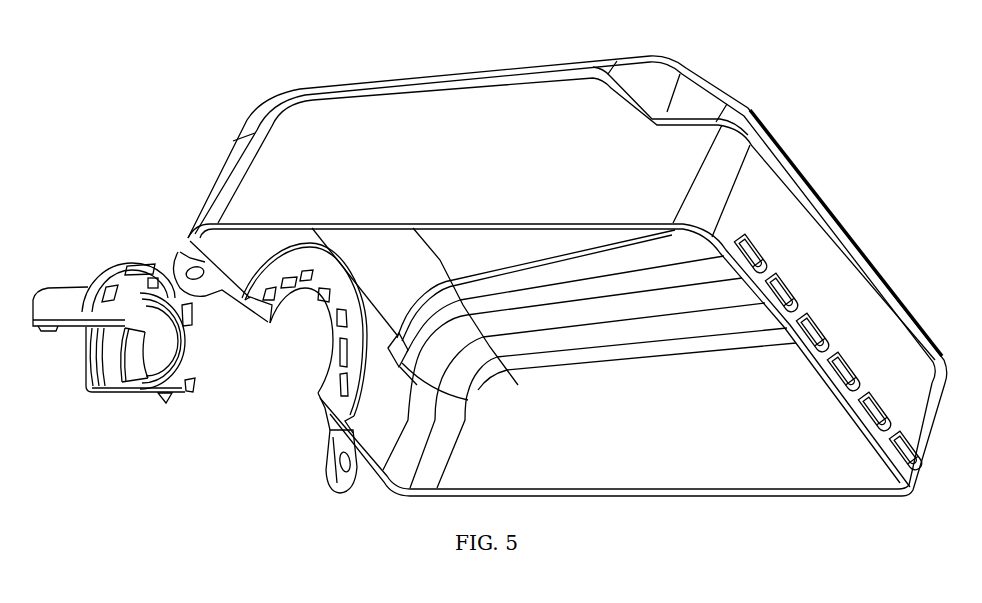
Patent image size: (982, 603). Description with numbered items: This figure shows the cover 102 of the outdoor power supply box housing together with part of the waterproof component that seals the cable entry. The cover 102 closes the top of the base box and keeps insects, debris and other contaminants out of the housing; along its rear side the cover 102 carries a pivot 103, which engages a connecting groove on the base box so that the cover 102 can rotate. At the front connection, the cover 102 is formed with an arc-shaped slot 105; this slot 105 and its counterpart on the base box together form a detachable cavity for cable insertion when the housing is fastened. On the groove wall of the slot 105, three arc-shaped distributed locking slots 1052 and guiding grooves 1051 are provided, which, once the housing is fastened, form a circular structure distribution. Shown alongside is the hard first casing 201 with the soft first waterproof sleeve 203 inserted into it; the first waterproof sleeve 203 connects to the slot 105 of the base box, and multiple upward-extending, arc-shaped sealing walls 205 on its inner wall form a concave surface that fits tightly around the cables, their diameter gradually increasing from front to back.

The cover 102 is at (531, 61).
The pivot 103 is at (784, 277).
The arc-shaped slot 105 is at (298, 362).
The guiding groove 1051 is at (286, 275).
The locking slot 1052 is at (350, 393).
The first casing 201 is at (135, 340).
The first waterproof sleeve 203 is at (125, 392).
The sealing wall 205 is at (165, 357).